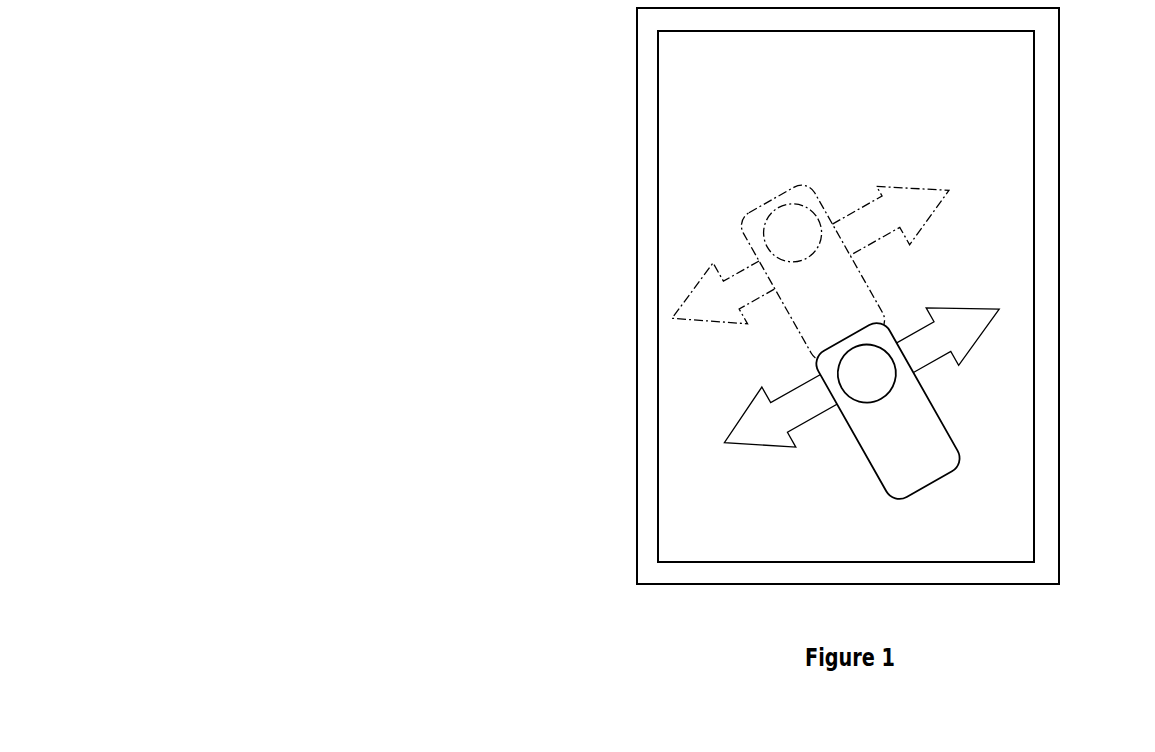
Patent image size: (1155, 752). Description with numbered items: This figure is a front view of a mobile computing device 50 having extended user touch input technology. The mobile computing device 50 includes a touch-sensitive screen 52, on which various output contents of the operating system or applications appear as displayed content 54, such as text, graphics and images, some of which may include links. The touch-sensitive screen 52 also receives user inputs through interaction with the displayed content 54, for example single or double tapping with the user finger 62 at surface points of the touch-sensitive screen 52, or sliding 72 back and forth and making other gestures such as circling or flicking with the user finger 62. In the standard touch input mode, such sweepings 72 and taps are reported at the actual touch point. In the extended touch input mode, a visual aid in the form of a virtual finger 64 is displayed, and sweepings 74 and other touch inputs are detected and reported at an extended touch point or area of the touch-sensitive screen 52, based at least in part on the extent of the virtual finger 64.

The mobile computing device 50 is at (421, 137).
The touch-sensitive screen 52 is at (1003, 127).
The displayed content 54 is at (925, 78).
The user finger 62 is at (863, 454).
The virtual finger 64 is at (825, 186).
The sliding 72 is at (969, 330).
The sweepings 74 is at (922, 203).